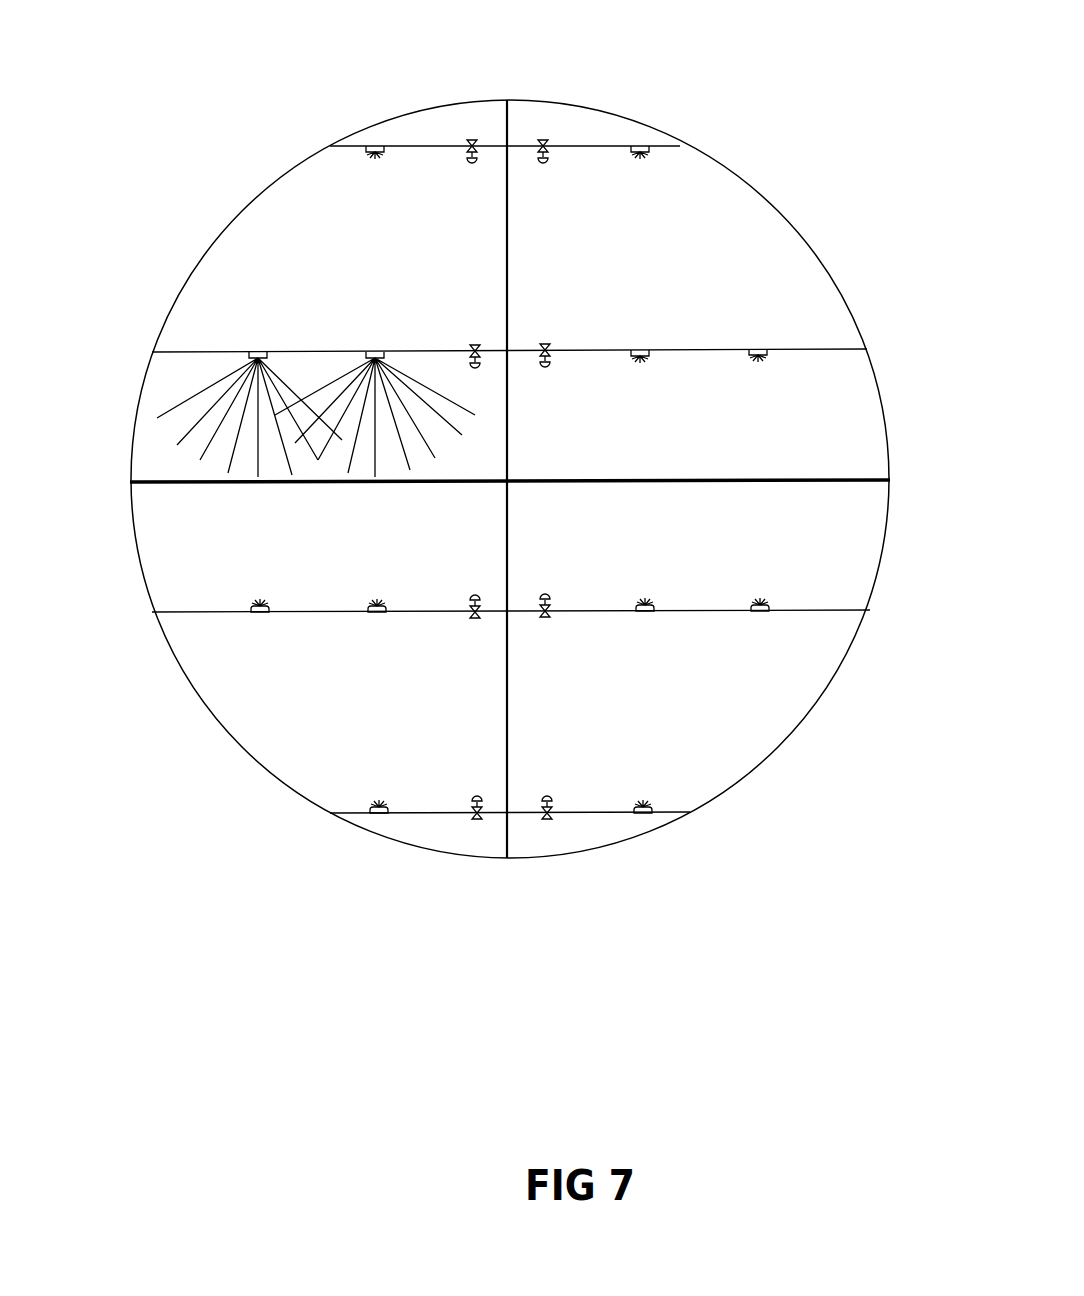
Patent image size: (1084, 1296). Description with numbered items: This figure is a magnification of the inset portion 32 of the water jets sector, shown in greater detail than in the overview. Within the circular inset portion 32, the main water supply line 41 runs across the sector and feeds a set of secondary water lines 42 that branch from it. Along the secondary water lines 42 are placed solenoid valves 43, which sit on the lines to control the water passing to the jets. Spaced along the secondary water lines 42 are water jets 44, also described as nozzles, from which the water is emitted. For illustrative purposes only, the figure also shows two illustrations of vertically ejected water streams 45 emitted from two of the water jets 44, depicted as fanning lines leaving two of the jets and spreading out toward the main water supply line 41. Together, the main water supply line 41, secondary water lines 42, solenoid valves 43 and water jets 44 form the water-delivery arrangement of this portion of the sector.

The inset portion 32 is at (240, 168).
The main water supply line 41 is at (175, 488).
The secondary water lines 42 is at (510, 400).
The solenoid valves 43 is at (475, 128).
The water jets 44 is at (657, 362).
The water streams 45 is at (390, 440).